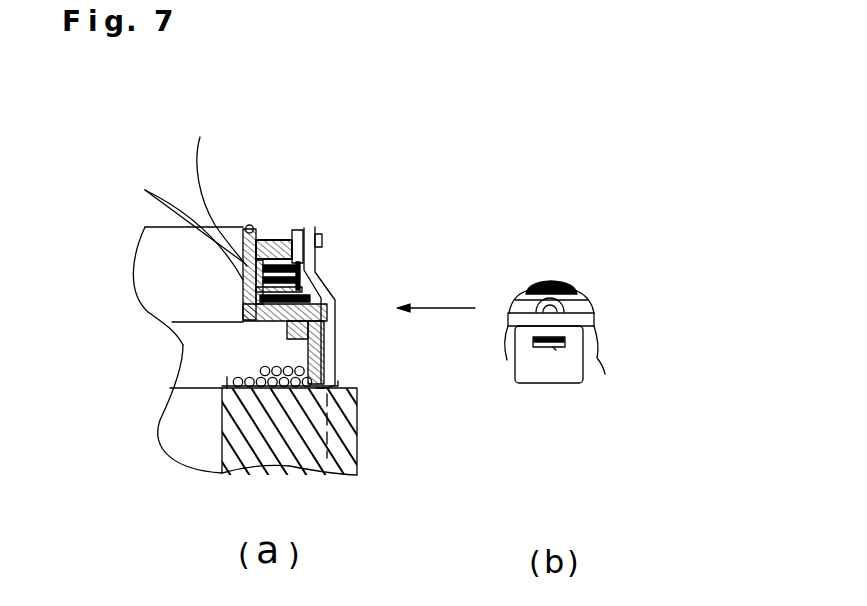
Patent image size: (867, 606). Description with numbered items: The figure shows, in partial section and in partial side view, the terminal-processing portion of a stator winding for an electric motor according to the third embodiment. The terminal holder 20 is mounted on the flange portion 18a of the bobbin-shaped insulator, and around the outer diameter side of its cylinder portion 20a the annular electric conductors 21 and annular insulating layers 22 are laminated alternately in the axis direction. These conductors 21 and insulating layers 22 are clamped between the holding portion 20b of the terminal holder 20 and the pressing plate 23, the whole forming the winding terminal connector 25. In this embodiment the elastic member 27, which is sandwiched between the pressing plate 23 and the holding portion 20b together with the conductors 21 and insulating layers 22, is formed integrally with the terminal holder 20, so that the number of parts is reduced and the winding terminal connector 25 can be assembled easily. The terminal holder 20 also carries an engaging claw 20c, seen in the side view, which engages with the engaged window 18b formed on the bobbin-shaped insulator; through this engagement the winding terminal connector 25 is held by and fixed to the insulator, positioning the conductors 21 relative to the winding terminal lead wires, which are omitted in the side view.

The flange portion 18a is at (330, 357).
The engaged window 18b is at (553, 346).
The terminal holder 20 is at (253, 318).
The cylinder portion 20a is at (256, 240).
The holding portion 20b is at (287, 336).
The engaging claw 20c is at (575, 343).
The electric conductor 21 is at (547, 284).
The insulating layer 22 is at (310, 272).
The pressing plate 23 is at (292, 238).
The winding terminal connector 25 is at (214, 179).
The elastic member 27 is at (336, 308).